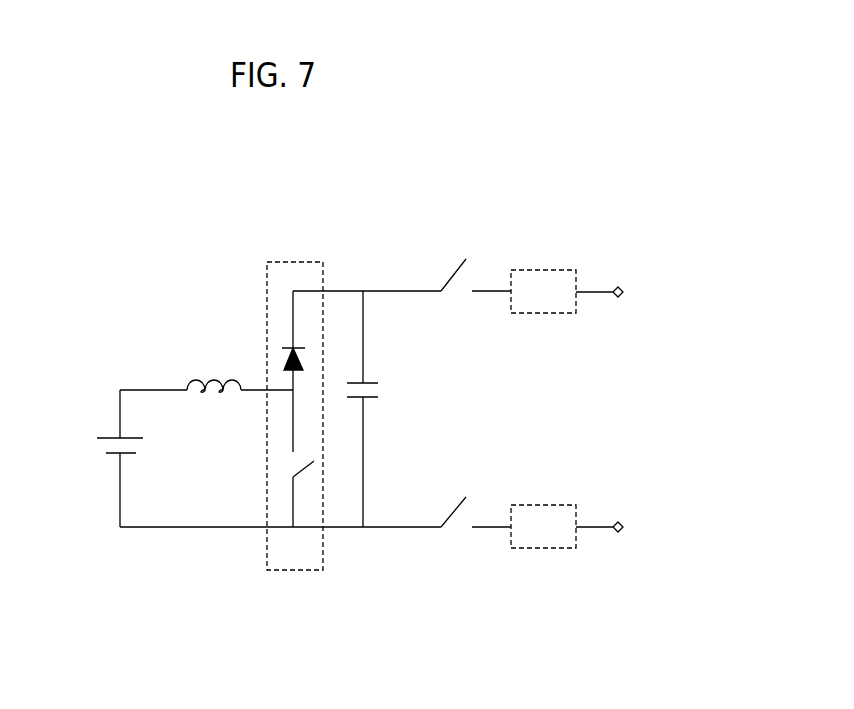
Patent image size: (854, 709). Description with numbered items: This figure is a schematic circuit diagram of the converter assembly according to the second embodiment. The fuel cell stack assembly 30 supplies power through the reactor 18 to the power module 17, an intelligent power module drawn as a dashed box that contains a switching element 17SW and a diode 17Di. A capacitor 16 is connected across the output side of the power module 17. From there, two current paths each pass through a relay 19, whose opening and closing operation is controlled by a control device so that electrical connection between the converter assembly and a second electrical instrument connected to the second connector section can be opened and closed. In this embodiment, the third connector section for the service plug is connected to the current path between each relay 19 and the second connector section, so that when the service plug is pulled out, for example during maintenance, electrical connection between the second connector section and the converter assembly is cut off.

The power module 17 is at (277, 262).
The diode 17Di is at (303, 361).
The switching element 17SW is at (312, 468).
The capacitor 16 is at (378, 390).
The reactor 18 is at (197, 376).
The fuel cell stack assembly 30 is at (103, 449).
The relay 19 is at (479, 255).